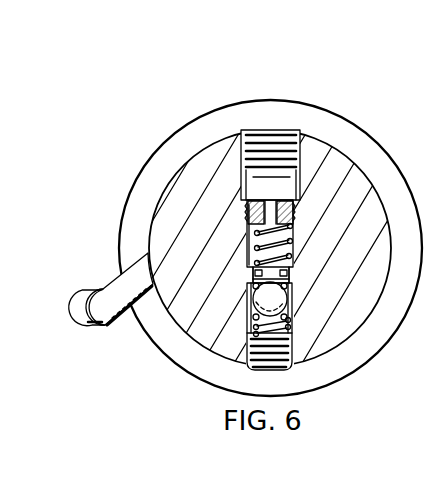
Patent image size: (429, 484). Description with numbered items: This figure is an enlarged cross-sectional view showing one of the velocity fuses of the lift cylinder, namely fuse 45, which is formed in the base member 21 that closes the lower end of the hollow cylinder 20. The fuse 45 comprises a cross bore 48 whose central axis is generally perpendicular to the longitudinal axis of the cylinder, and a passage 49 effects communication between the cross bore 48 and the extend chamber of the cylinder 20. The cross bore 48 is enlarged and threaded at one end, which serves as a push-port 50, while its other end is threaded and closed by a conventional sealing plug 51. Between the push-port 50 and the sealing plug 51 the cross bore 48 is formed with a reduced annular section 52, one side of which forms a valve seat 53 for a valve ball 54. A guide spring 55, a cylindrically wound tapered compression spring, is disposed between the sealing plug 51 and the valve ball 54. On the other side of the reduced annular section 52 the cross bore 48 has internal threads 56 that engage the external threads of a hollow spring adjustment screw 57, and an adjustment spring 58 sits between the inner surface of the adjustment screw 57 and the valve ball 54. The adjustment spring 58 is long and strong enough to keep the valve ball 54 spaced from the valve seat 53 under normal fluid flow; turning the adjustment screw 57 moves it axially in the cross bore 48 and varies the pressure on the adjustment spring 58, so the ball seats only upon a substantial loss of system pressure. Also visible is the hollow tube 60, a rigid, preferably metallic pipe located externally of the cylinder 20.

The hollow cylinder 20 is at (337, 114).
The base member 21 is at (343, 152).
The fuse 45 is at (295, 237).
The cross bore 48 is at (294, 252).
The passage 49 is at (252, 293).
The push-port 50 is at (252, 131).
The sealing plug 51 is at (288, 366).
The reduced annular section 52 is at (286, 280).
The valve seat 53 is at (289, 295).
The valve ball 54 is at (278, 302).
The guide spring 55 is at (288, 327).
The internal threads 56 is at (292, 232).
The spring adjustment screw 57 is at (294, 213).
The adjustment spring 58 is at (247, 240).
The hollow tube 60 is at (73, 309).